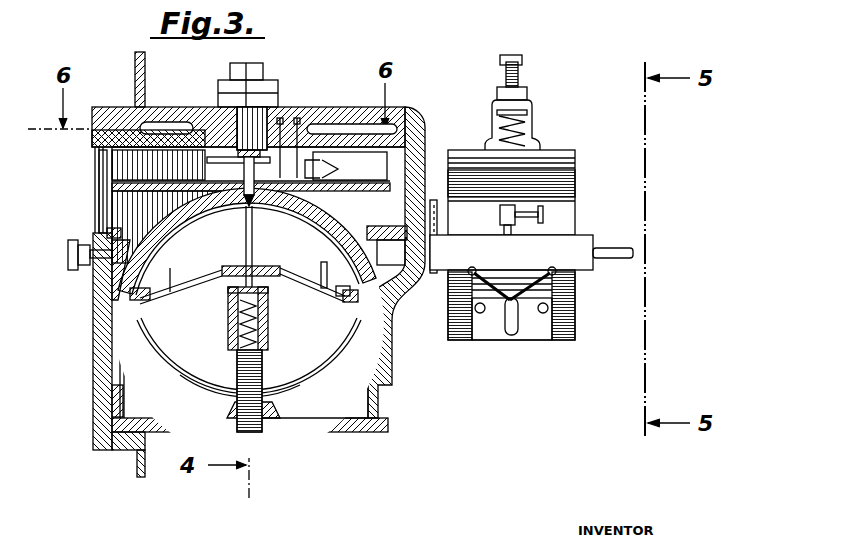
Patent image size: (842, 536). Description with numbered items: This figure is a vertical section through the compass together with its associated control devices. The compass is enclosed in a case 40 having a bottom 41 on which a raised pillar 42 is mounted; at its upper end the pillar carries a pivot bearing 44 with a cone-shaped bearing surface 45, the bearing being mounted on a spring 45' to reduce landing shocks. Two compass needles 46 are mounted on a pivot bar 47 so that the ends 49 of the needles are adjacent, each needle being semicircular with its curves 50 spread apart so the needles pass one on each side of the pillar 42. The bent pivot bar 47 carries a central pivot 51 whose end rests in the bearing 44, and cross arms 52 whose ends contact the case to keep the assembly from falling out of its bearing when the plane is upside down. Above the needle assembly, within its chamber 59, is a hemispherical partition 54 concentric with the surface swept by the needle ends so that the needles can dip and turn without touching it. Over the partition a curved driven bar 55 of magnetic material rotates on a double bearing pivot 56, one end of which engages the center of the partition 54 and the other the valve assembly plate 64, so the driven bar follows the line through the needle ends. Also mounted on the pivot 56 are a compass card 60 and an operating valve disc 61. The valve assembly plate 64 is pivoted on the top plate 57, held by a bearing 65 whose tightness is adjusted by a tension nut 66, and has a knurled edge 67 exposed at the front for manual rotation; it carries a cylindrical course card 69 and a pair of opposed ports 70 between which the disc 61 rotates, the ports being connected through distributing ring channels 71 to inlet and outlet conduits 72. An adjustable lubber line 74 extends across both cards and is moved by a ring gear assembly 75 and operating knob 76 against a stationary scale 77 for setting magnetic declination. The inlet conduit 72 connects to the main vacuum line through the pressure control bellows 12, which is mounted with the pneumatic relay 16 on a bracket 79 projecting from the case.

The pressure control bellows 12 is at (575, 310).
The pneumatic relay 16 is at (575, 182).
The case 40 is at (392, 380).
The bottom 41 is at (305, 432).
The raised pillar 42 is at (263, 362).
The pivot bearing 44 is at (268, 301).
The cone-shaped bearing surface 45 is at (242, 275).
The spring 45' is at (274, 324).
The compass needles 46 is at (312, 370).
The pivot bar 47 is at (322, 283).
The ends of the needles 49 is at (348, 302).
The curves 50 is at (212, 387).
The central pivot 51 is at (251, 264).
The cross arms 52 is at (150, 290).
The hemispherical partition 54 is at (322, 213).
The driven bar 55 is at (385, 226).
The double bearing pivot 56 is at (243, 172).
The top plate 57 is at (340, 112).
The chamber 59 is at (336, 408).
The compass card 60 is at (108, 205).
The operating valve disc 61 is at (212, 152).
The valve assembly plate 64 is at (390, 137).
The bearing 65 is at (268, 123).
The tension nut 66 is at (258, 90).
The knurled edge 67 is at (92, 142).
The course card 69 is at (110, 166).
The ports 70 is at (327, 165).
The distributing ring channels 71 is at (299, 140).
The inlet and outlet conduits 72 is at (283, 125).
The adjustable lubber line 74 is at (102, 213).
The ring gear assembly 75 is at (112, 280).
The operating knob 76 is at (68, 253).
The stationary scale 77 is at (108, 233).
The bracket 79 is at (552, 259).